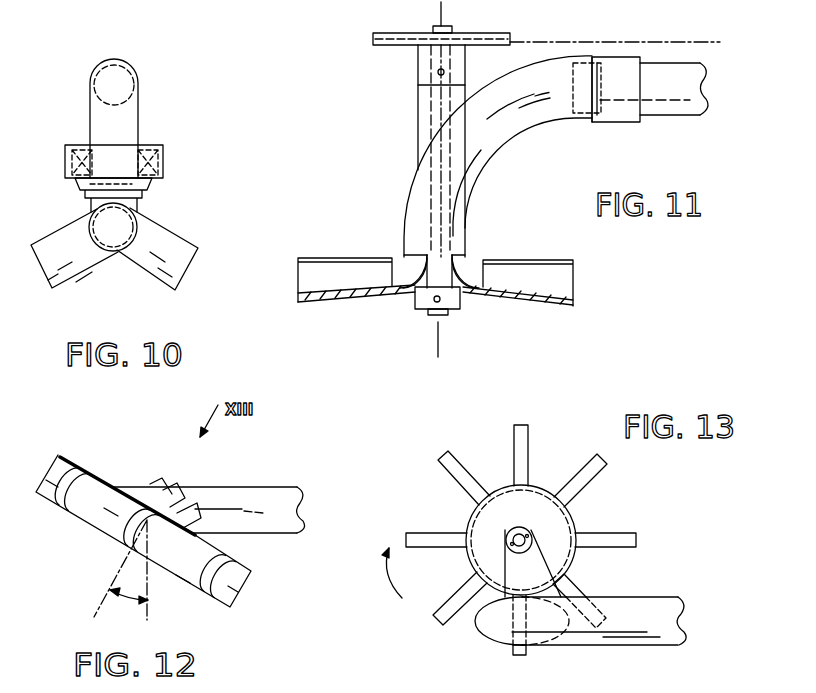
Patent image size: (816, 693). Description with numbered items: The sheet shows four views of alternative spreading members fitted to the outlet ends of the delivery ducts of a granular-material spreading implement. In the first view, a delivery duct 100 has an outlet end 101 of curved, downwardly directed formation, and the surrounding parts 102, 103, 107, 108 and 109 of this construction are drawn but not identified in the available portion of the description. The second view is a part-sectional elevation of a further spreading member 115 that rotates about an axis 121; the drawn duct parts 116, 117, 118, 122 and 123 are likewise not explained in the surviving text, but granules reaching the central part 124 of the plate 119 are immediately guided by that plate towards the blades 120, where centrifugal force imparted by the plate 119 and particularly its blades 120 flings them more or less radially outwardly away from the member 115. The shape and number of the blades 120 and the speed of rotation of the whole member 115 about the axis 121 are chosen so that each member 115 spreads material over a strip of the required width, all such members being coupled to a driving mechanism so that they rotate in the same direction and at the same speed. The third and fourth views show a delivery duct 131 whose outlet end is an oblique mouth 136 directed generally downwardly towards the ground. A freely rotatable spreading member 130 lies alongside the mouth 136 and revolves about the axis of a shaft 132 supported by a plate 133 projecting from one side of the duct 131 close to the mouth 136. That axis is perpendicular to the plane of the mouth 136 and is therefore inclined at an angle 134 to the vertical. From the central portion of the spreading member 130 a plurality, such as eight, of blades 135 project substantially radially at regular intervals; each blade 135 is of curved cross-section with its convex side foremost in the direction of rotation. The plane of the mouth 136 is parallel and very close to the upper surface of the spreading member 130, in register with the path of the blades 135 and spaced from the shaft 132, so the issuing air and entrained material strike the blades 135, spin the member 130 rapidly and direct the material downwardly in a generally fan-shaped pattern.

In FIG. 10, the delivery duct 100 is at (133, 47).
In FIG. 10, the outlet end 101 is at (122, 132).
In FIG. 10, the annular ring 102 is at (147, 280).
In FIG. 10, the clamp bracket 103 is at (163, 160).
In FIG. 10, the left branch pipe 107 is at (62, 238).
In FIG. 10, the right branch pipe 108 is at (173, 248).
In FIG. 10, the flanged spigot 109 is at (140, 202).
In FIG. 11, the spreading member 115 is at (577, 287).
In FIG. 11, the vertical tube 116 is at (418, 107).
In FIG. 11, the elbow pipe 117 is at (520, 126).
In FIG. 11, the horizontal pipe 118 is at (688, 112).
In FIG. 11, the plate 119 is at (496, 287).
In FIG. 11, the blades 120 is at (342, 243).
In FIG. 11, the axis 121 is at (438, 333).
In FIG. 11, the cross bar 122 is at (373, 43).
In FIG. 11, the horizontal axis 123 is at (592, 30).
In FIG. 11, the central part of the plate 124 is at (423, 267).
In FIG. 12, the spreading member 130 is at (107, 440).
In FIG. 13, the spreading member 130 is at (428, 497).
In FIG. 12, the delivery duct 131 is at (262, 488).
In FIG. 13, the delivery duct 131 is at (673, 582).
In FIG. 12, the shaft 132 is at (187, 457).
In FIG. 13, the shaft 132 is at (540, 513).
In FIG. 13, the plate 133 is at (513, 563).
In FIG. 12, the angle 134 is at (124, 600).
In FIG. 12, the blades 135 is at (130, 546).
In FIG. 13, the blades 135 is at (522, 440).
In FIG. 12, the oblique mouth 136 is at (229, 501).